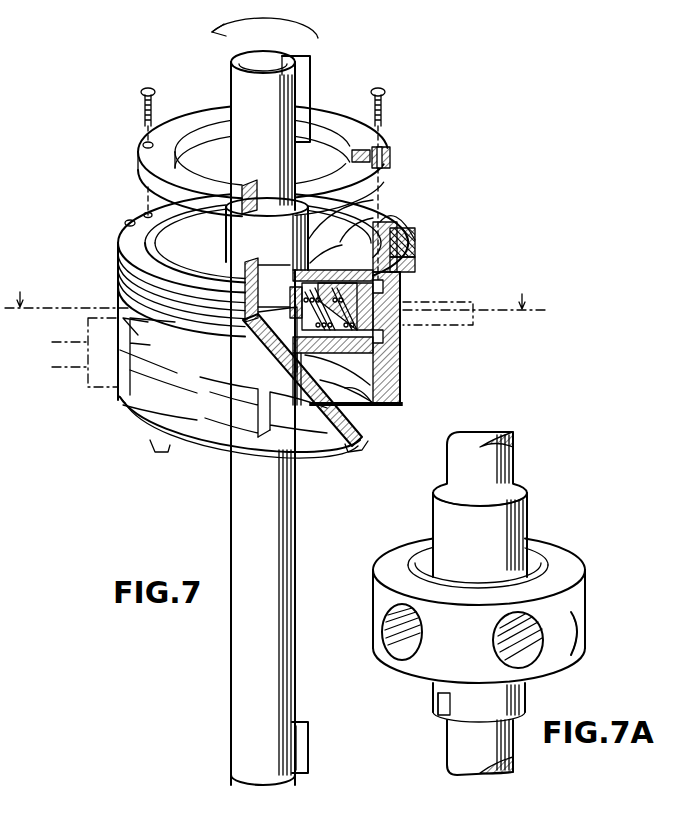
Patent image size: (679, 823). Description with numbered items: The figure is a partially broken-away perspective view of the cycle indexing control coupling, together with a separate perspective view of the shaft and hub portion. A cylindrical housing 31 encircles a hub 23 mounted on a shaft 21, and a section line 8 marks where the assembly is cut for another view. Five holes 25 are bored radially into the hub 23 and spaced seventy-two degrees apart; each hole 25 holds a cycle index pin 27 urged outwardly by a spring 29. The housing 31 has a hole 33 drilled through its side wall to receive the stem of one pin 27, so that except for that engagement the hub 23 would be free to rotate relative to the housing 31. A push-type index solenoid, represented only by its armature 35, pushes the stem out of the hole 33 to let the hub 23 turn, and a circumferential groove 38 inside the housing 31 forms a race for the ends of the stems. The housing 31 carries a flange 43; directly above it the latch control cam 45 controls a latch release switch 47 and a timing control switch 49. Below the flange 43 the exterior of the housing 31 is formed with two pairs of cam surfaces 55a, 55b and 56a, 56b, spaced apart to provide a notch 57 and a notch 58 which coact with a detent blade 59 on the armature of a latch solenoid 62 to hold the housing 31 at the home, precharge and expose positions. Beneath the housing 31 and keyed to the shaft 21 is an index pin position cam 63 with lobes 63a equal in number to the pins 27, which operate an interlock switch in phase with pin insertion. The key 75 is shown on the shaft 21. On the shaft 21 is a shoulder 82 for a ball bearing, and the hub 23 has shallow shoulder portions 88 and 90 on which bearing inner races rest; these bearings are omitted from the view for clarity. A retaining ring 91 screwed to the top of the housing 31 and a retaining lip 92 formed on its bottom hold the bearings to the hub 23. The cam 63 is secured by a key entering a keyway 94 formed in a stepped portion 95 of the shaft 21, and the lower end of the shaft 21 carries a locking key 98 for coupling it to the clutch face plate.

In FIG. 7, the section line 8- 8 is at (275, 290).
In FIG. 7, the shaft 21 is at (267, 514).
In FIG. 7A, the shaft 21 is at (481, 485).
In FIG. 7, the hub 23 is at (362, 262).
In FIG. 7A, the hub 23 is at (461, 643).
In FIG. 7, the holes 25 is at (300, 323).
In FIG. 7A, the holes 25 is at (388, 655).
In FIG. 7, the cycle index pin 27 is at (384, 297).
In FIG. 7, the spring 29 is at (367, 355).
In FIG. 7, the cylindrical housing 31 is at (204, 359).
In FIG. 7, the hole 33 is at (385, 337).
In FIG. 7, the armature 35 is at (448, 302).
In FIG. 7, the groove 38 is at (276, 322).
In FIG. 7, the flange 43 is at (122, 290).
In FIG. 7, the latch control cam 45 is at (120, 266).
In FIG. 7, the latch release switch 47 is at (117, 250).
In FIG. 7, the timing control switch 49 is at (125, 225).
In FIG. 7, the cam surface 55a is at (146, 326).
In FIG. 7, the cam surface 55b is at (158, 385).
In FIG. 7, the cam surface 56a is at (250, 421).
In FIG. 7, the cam surface 56b is at (312, 424).
In FIG. 7, the notch 57 is at (146, 357).
In FIG. 7, the notch 58 is at (271, 443).
In FIG. 7, the detent blade 59 is at (122, 316).
In FIG. 7, the latch solenoid 62 is at (90, 388).
In FIG. 7, the index pin position cam 63 is at (125, 407).
In FIG. 7, the lobes 63a is at (153, 452).
In FIG. 7, the key 75 is at (311, 84).
In FIG. 7, the shoulder 82 is at (279, 234).
In FIG. 7A, the shoulder 82 is at (520, 490).
In FIG. 7, the shallow shoulder portion 88 is at (318, 264).
In FIG. 7A, the shallow shoulder portion 88 is at (537, 568).
In FIG. 7, the shallow shoulder portion 90 is at (320, 360).
In FIG. 7, the retaining ring 91 is at (210, 116).
In FIG. 7, the retaining lip 92 is at (370, 407).
In FIG. 7A, the keyway 94 is at (450, 705).
In FIG. 7A, the stepped portion 95 is at (437, 699).
In FIG. 7, the locking key 98 is at (309, 748).